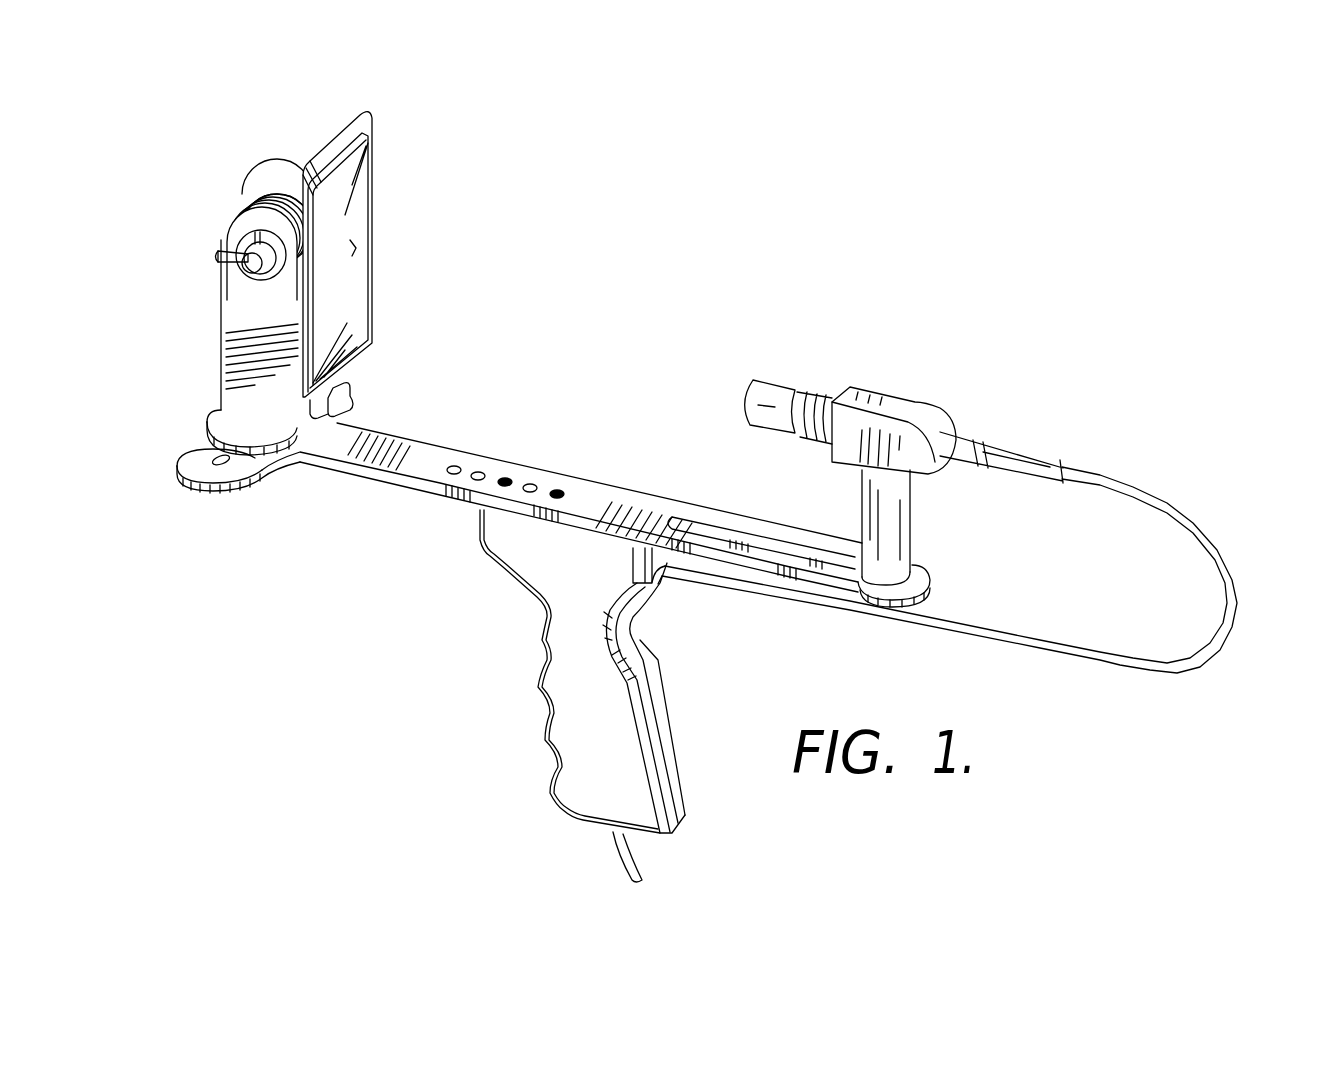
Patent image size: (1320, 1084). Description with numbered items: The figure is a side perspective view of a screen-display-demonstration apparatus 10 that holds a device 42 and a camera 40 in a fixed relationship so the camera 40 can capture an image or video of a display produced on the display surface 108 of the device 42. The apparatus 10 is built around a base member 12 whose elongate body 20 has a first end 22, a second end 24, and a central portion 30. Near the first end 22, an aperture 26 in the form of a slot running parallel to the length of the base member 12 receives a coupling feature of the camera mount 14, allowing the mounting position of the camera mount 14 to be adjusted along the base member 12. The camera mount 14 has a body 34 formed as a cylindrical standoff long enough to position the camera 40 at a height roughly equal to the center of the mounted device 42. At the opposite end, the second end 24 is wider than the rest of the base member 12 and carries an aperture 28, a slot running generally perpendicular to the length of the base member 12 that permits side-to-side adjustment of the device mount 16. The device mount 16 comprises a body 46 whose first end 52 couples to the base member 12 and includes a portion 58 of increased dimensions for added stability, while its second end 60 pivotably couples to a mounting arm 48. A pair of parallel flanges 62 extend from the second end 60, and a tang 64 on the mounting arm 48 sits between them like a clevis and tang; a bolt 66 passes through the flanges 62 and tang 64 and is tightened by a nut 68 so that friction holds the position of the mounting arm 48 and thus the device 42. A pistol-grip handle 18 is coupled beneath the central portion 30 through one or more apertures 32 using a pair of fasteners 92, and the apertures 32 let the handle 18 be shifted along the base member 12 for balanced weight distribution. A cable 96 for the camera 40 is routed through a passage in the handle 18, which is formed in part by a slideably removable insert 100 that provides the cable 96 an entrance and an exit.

The screen-display-demonstration apparatus 10 is at (700, 197).
The base member 12 is at (417, 448).
The camera mount 14 is at (914, 508).
The device mount 16 is at (220, 296).
The handle 18 is at (536, 603).
The elongate body 20 is at (432, 503).
The first end 22 is at (926, 580).
The second end 24 is at (192, 456).
The aperture 26 is at (776, 550).
The aperture 28 is at (227, 465).
The central portion 30 is at (588, 466).
The apertures 32 is at (482, 470).
The body 34 is at (914, 548).
The camera 40 is at (895, 392).
The device 42 is at (383, 134).
The body 46 is at (224, 335).
The mounting arm 48 is at (293, 208).
The first end 52 is at (220, 370).
The portion of increased dimensions 58 is at (222, 414).
The second end 60 is at (222, 238).
The flanges 62 is at (270, 203).
The tang 64 is at (256, 203).
The bolt 66 is at (244, 272).
The nut 68 is at (216, 262).
The fasteners 92 is at (557, 488).
The cable 96 is at (1238, 612).
The insert 100 is at (640, 648).
The display surface 108 is at (366, 250).